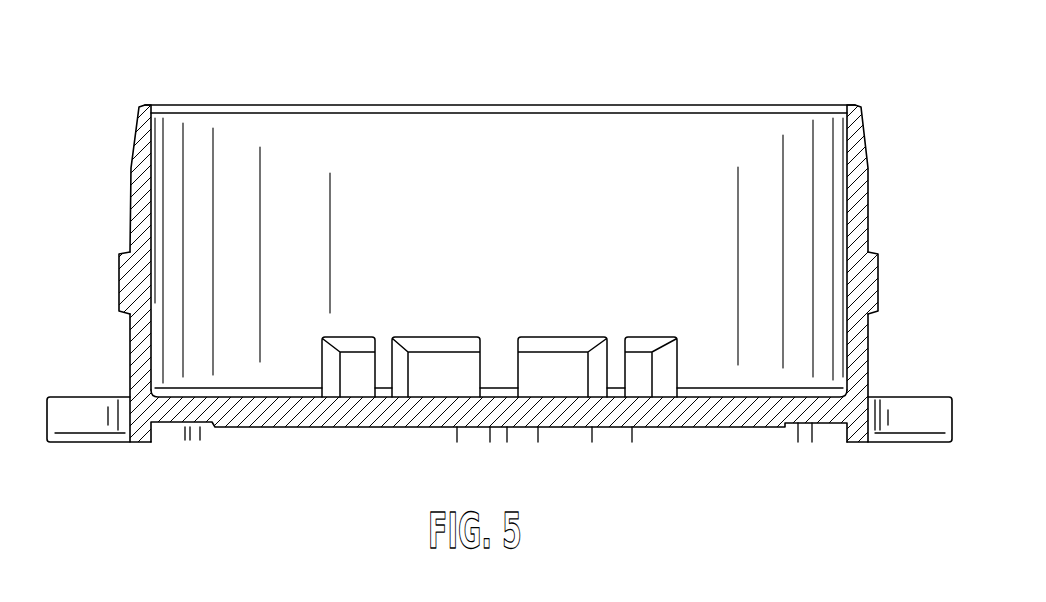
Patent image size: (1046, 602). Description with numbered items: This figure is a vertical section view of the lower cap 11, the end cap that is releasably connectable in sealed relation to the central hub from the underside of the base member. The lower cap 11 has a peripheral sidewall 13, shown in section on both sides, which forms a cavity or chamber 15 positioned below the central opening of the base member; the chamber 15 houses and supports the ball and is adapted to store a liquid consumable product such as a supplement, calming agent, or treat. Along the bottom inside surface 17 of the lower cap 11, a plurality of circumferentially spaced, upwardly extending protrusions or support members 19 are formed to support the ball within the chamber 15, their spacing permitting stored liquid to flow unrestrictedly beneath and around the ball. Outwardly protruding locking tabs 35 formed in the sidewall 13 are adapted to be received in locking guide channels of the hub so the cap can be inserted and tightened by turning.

The lower cap 11 is at (881, 113).
The peripheral sidewall 13 is at (140, 172).
The cavity or chamber 15 is at (517, 253).
The bottom inside surface 17 is at (257, 397).
The support members 19 is at (435, 375).
The locking tab 35 is at (132, 283).